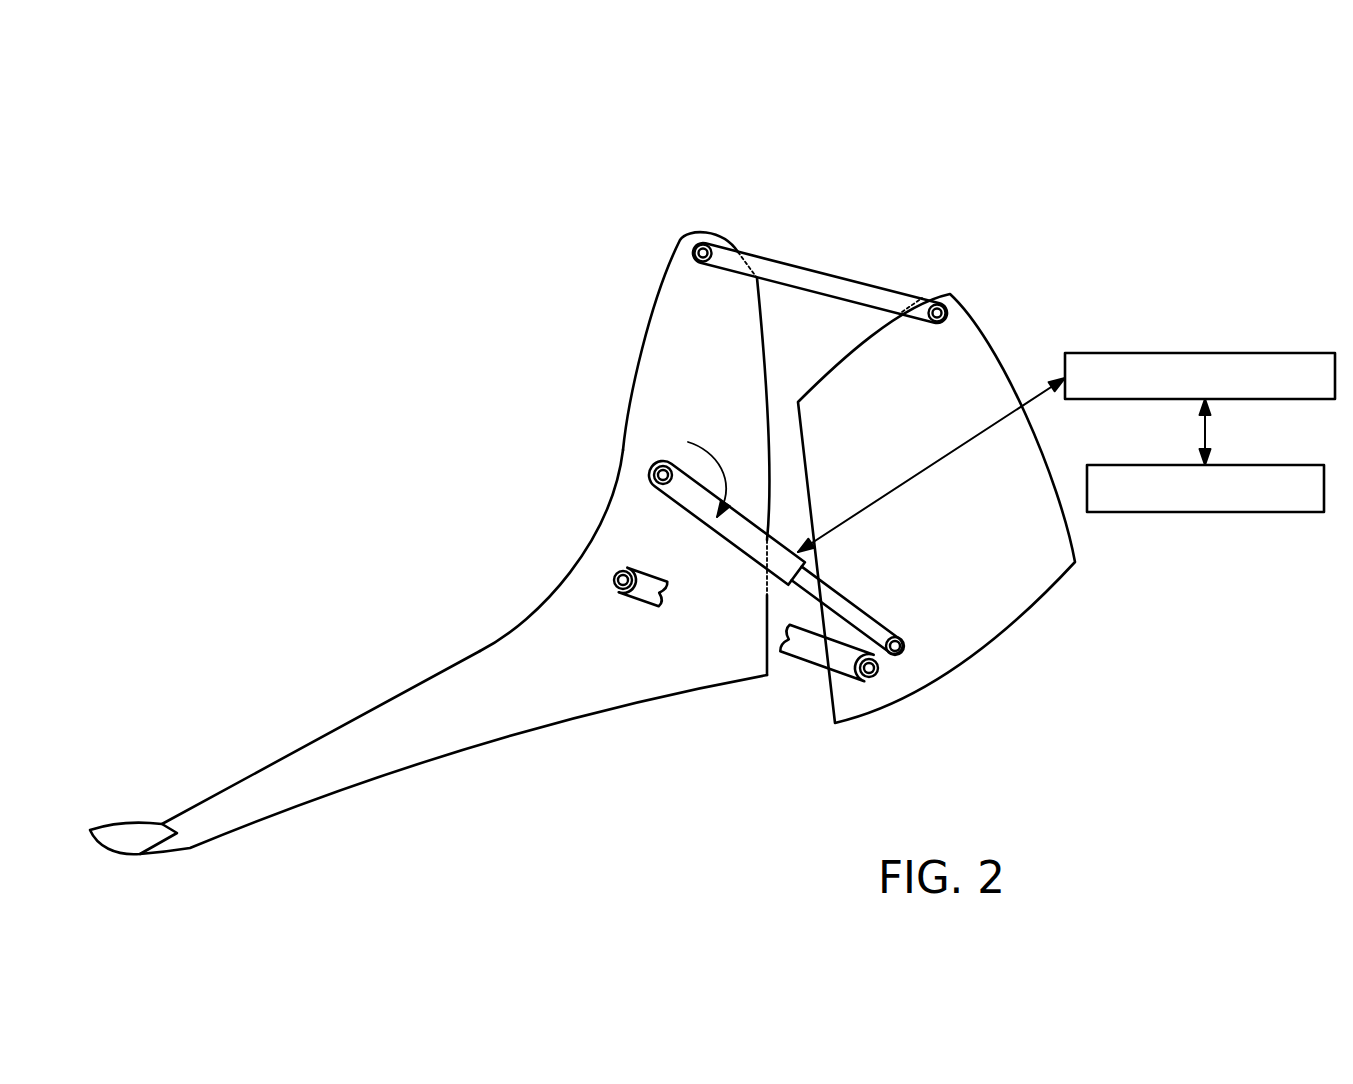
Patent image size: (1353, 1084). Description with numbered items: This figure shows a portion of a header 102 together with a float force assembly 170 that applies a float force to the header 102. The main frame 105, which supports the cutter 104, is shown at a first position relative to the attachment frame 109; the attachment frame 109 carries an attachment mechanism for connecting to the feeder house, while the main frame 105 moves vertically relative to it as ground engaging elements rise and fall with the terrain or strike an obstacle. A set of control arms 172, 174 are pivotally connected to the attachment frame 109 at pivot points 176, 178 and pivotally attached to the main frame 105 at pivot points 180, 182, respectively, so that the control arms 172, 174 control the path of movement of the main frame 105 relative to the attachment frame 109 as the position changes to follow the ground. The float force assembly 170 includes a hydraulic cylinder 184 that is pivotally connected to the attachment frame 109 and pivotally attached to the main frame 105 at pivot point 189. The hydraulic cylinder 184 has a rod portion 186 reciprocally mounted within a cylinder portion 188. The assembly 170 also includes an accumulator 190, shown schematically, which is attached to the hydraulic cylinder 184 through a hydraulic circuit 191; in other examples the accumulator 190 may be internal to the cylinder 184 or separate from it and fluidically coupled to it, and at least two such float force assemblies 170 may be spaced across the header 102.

The header 102 is at (417, 479).
The cutter 104 is at (122, 823).
The main frame 105 is at (517, 733).
The attachment frame 109 is at (1075, 562).
The float force assembly 170 is at (922, 458).
The control arm 172 is at (830, 272).
The control arm 174 is at (810, 665).
The pivot point 176 is at (953, 297).
The pivot point 178 is at (650, 467).
The pivot point 180 is at (710, 235).
The pivot point 182 is at (607, 588).
The hydraulic cylinder 184 is at (693, 472).
The rod portion 186 is at (759, 557).
The cylinder portion 188 is at (678, 508).
The pivot point 189 is at (898, 635).
The accumulator 190 is at (1205, 488).
The hydraulic circuit 191 is at (1066, 452).